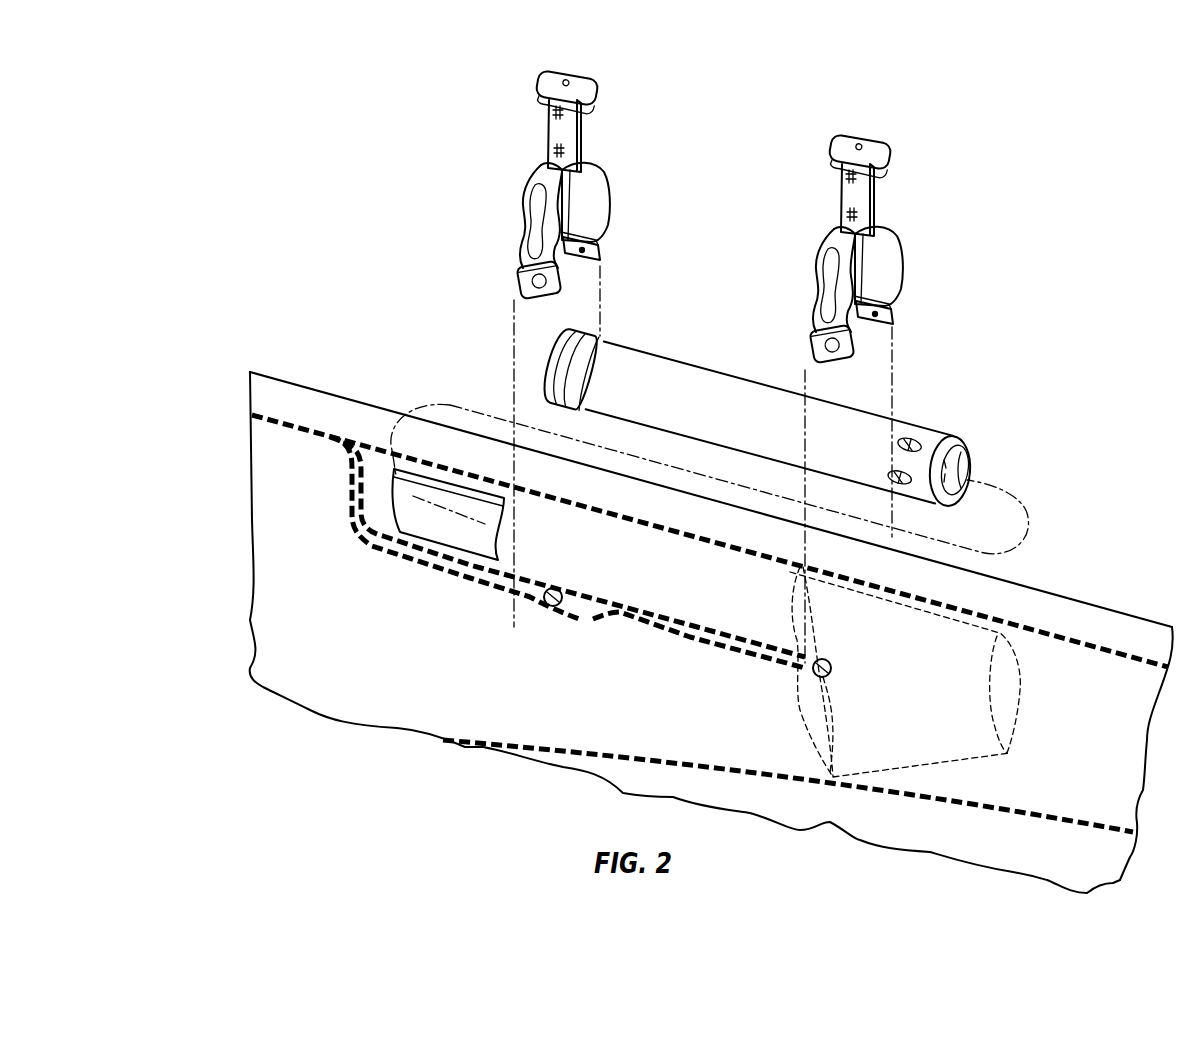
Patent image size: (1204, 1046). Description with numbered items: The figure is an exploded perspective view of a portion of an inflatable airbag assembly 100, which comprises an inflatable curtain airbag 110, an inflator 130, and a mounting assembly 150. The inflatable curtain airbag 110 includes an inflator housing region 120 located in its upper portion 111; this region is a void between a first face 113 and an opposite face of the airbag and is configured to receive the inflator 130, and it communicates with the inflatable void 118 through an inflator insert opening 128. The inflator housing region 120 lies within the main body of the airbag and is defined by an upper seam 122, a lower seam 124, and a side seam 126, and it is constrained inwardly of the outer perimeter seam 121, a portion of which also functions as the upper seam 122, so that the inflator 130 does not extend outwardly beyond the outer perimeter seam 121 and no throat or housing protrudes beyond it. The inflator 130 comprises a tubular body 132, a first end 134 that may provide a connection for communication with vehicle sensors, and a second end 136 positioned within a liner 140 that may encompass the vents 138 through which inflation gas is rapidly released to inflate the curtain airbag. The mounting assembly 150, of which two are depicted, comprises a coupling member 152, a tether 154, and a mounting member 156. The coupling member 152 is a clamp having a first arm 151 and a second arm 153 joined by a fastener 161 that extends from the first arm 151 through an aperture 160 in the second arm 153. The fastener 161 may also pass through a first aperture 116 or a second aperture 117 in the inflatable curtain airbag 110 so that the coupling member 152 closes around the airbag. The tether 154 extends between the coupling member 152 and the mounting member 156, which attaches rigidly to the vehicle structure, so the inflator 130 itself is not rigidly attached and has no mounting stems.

The inflatable airbag assembly 100 is at (1142, 162).
The inflatable curtain airbag 110 is at (1040, 680).
The upper portion 111 is at (296, 472).
The first face 113 is at (653, 716).
The first aperture 116 is at (545, 600).
The second aperture 117 is at (814, 670).
The inflatable void 118 is at (1113, 680).
The inflator housing region 120 is at (606, 592).
The outer perimeter seam 121 is at (290, 420).
The upper seam 122 is at (440, 467).
The lower seam 124 is at (448, 568).
The side seam 126 is at (350, 499).
The inflator insert opening 128 is at (410, 528).
The inflator 130 is at (782, 370).
The tubular body 132 is at (657, 366).
The first end 134 is at (600, 362).
The second end 136 is at (947, 428).
The vents 138 is at (912, 437).
The liner 140 is at (897, 700).
The mounting assembly 150 is at (874, 225).
The first arm 151 is at (820, 268).
The coupling member 152 is at (885, 274).
The second arm 153 is at (885, 250).
The tether 154 is at (850, 204).
The mounting member 156 is at (850, 145).
The aperture 160 is at (895, 324).
The fastener 161 is at (818, 344).